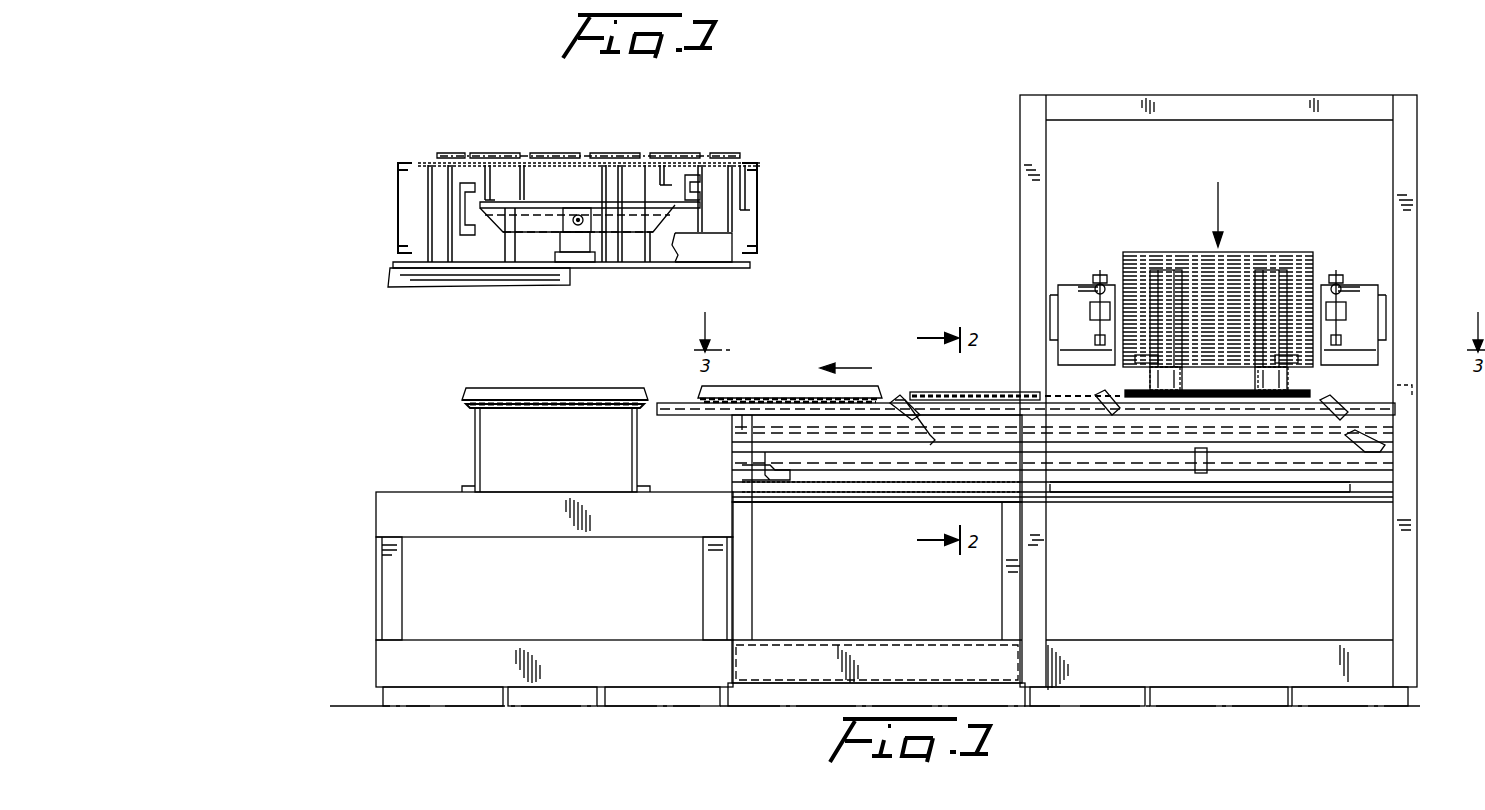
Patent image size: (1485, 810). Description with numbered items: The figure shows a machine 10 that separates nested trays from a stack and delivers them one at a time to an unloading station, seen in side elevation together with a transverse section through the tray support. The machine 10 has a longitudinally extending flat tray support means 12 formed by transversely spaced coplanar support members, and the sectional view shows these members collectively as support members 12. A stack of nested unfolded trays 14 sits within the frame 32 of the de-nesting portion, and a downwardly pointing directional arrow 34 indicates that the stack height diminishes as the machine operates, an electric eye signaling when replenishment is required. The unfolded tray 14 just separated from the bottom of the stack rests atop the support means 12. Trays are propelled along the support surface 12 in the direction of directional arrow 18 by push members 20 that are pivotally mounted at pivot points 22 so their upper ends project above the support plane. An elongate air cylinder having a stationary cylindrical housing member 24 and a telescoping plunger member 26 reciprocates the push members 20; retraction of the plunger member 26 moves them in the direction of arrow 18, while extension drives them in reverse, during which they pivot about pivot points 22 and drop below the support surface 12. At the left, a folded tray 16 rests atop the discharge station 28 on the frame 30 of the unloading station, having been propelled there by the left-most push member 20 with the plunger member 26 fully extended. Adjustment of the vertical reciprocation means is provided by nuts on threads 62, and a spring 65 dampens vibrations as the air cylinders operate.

In FIG. 1, the machine 10 is at (968, 212).
In FIG. 1, the tray support means 12 is at (668, 403).
In FIG. 2, the tray support means 12 is at (425, 162).
In FIG. 1, the unfolded tray member 14 is at (1298, 237).
In FIG. 2, the unfolded tray member 14 is at (445, 150).
In FIG. 1, the folded tray member 16 is at (513, 388).
In FIG. 1, the directional arrow 18 is at (855, 368).
In FIG. 1, the push member 20 is at (895, 403).
In FIG. 2, the push member 20 is at (495, 165).
In FIG. 1, the pivot point 22 is at (902, 422).
In FIG. 1, the cylindrical housing member 24 is at (905, 470).
In FIG. 1, the telescoping plunger member 26 is at (1210, 470).
In FIG. 1, the discharge station 28 is at (475, 450).
In FIG. 1, the frame of the unloading station 30 is at (380, 588).
In FIG. 1, the frame of the tray de-nesting portion 32 is at (1417, 582).
In FIG. 1, the downwardly pointing directional arrow 34 is at (1218, 200).
In FIG. 1, the threads 62 is at (1097, 273).
In FIG. 1, the spring 65 is at (1233, 395).